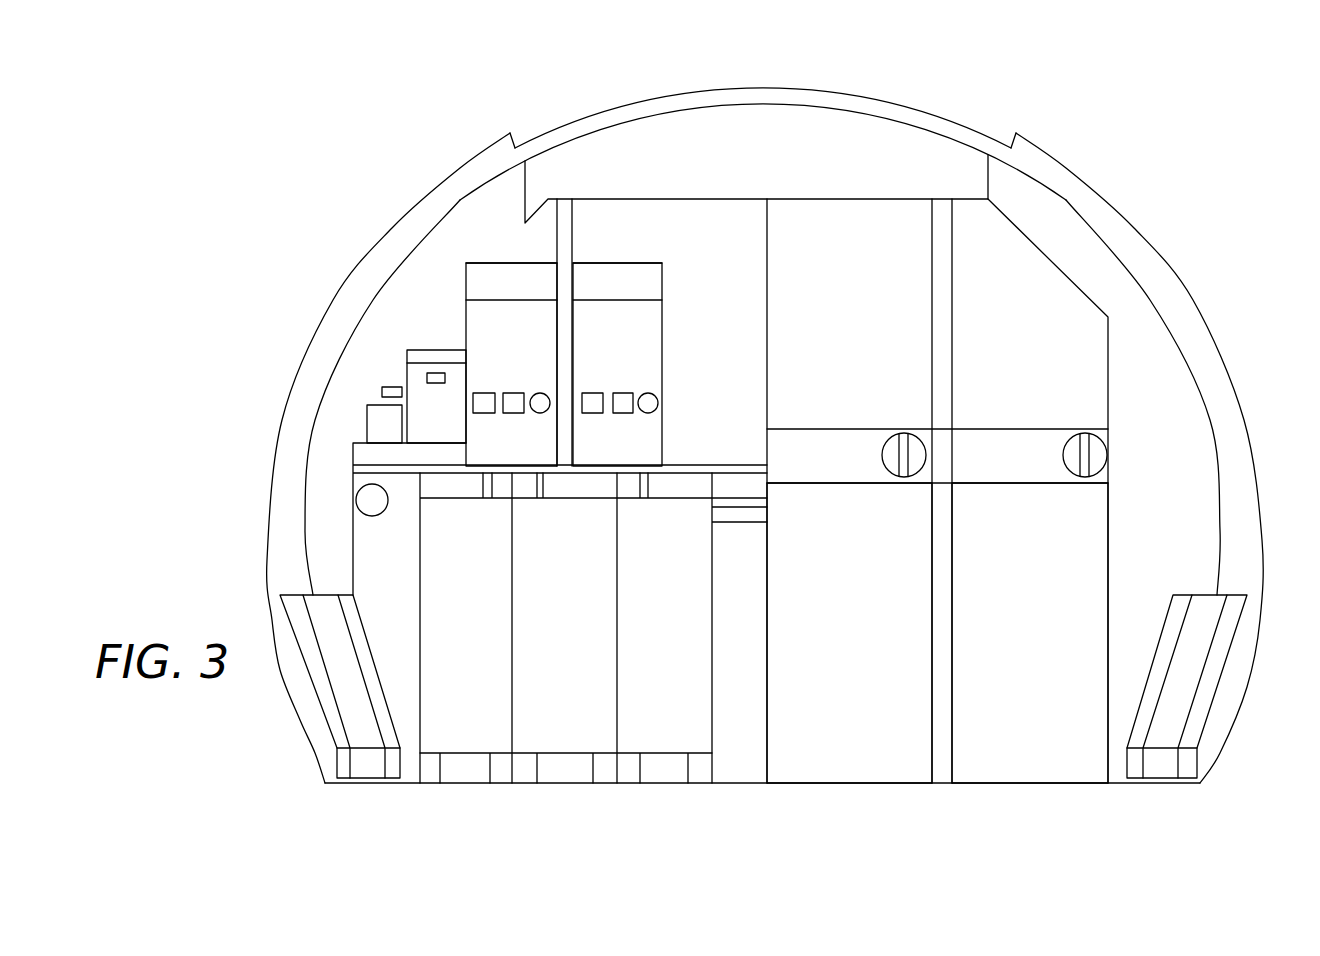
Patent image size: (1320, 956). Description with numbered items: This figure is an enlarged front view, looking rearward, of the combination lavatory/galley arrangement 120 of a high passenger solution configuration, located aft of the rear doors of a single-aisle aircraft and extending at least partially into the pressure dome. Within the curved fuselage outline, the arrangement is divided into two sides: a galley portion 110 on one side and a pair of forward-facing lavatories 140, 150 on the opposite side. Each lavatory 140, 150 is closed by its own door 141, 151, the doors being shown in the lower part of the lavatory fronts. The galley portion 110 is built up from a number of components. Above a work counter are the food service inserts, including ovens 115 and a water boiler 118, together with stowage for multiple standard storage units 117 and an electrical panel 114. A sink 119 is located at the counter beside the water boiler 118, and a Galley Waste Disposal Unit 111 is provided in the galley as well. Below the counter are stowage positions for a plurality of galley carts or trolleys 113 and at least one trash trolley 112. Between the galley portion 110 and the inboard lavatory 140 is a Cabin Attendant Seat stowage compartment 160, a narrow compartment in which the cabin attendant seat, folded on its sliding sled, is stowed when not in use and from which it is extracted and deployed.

The galley portion 110 is at (417, 301).
The Galley Waste Disposal Unit 111 is at (373, 535).
The trash trolley 112 is at (457, 727).
The galley carts or trolleys 113 is at (657, 708).
The electrical panel 114 is at (490, 287).
The ovens 115 is at (510, 335).
The standard storage units 117 is at (615, 333).
The water boiler 118 is at (420, 375).
The sink 119 is at (383, 426).
The lavatory/galley arrangement 120 is at (1202, 168).
The lavatory 140 is at (853, 243).
The door 141 is at (849, 633).
The lavatory 150 is at (1052, 345).
The door 151 is at (1030, 633).
The Cabin Attendant Seat stowage compartment 160 is at (733, 758).